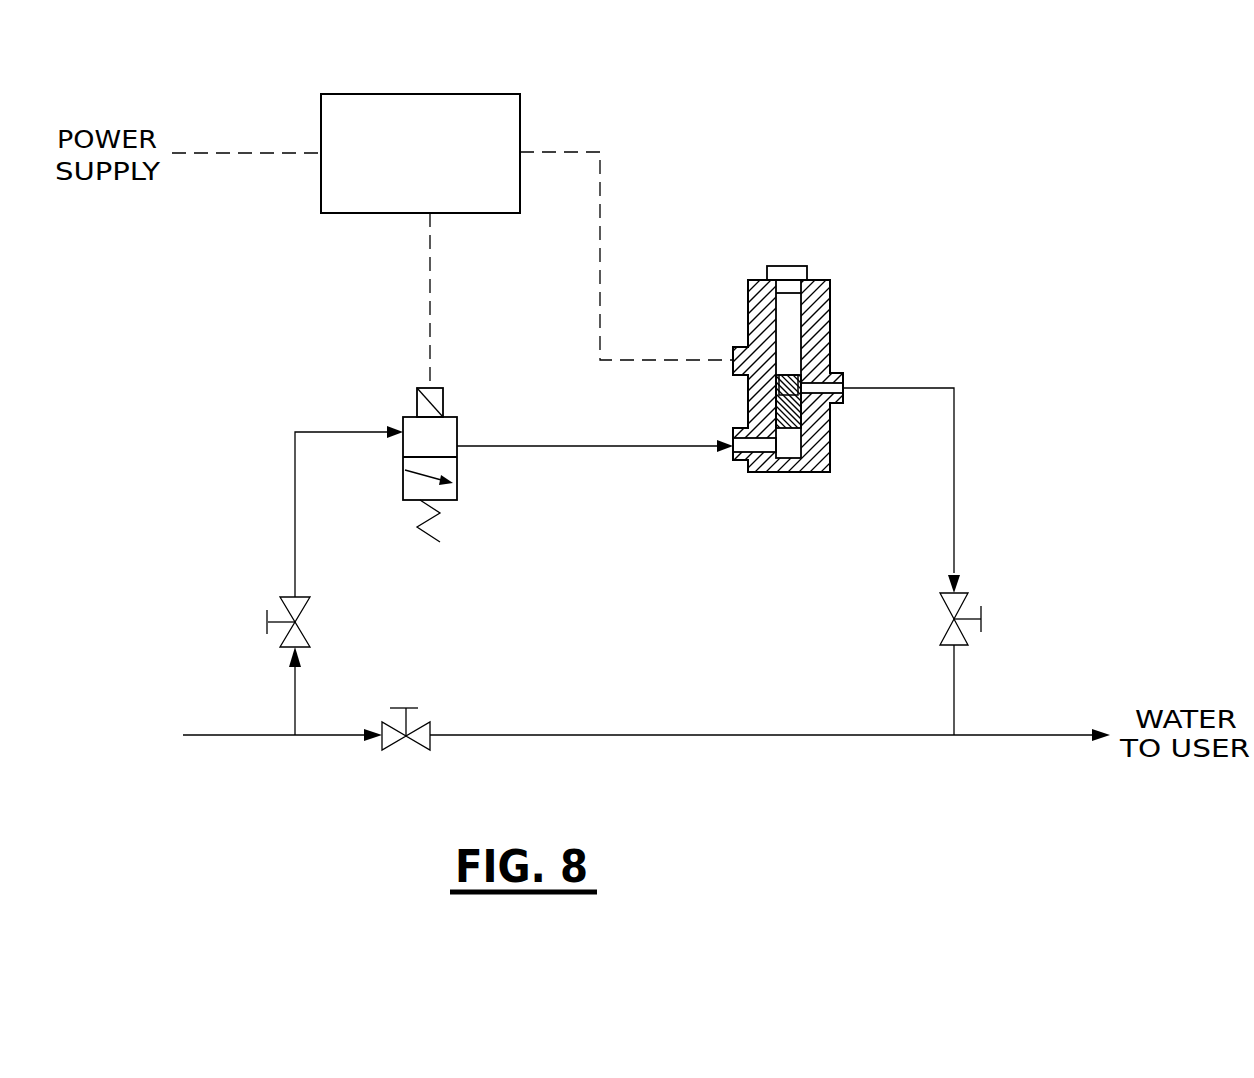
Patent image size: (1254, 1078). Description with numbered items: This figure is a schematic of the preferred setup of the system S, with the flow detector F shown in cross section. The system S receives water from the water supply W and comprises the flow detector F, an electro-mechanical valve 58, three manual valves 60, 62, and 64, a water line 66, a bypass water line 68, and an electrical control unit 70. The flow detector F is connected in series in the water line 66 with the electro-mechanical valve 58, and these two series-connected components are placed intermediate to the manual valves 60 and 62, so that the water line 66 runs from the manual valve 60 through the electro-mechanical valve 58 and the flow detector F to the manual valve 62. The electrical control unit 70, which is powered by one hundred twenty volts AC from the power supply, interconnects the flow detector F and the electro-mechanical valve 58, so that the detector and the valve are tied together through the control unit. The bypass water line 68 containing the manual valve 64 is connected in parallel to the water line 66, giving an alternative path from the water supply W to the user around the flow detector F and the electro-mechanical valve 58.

The electrical control unit 70 is at (446, 96).
The electro-mechanical valve 58 is at (460, 425).
The water line 66 is at (292, 510).
The manual valve 60 is at (300, 618).
The manual valve 62 is at (945, 615).
The manual valve 64 is at (410, 745).
The bypass water line 68 is at (633, 737).
The system S is at (772, 152).
The flow detector F is at (833, 314).
The water supply W is at (98, 697).